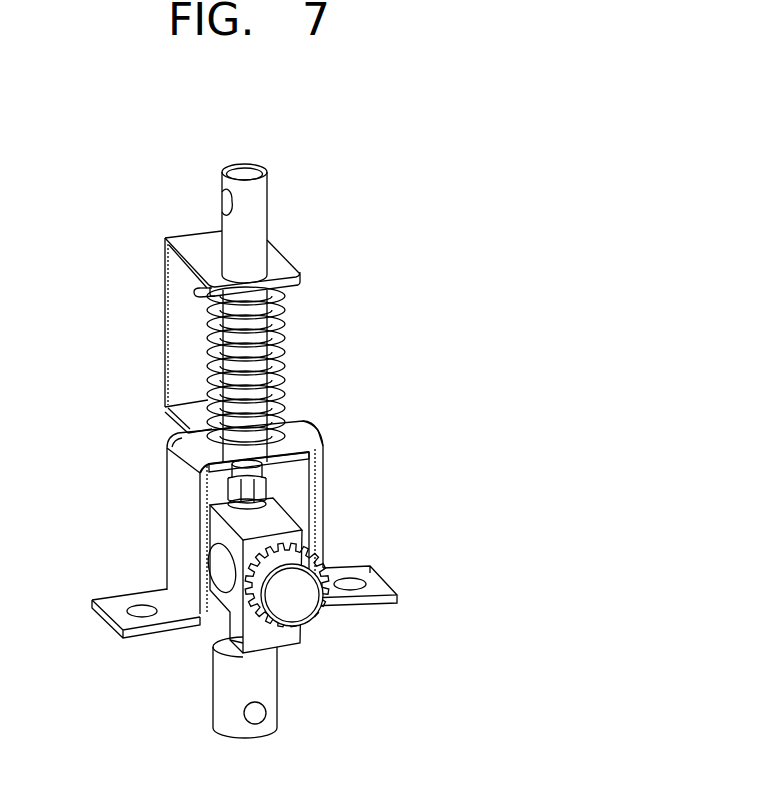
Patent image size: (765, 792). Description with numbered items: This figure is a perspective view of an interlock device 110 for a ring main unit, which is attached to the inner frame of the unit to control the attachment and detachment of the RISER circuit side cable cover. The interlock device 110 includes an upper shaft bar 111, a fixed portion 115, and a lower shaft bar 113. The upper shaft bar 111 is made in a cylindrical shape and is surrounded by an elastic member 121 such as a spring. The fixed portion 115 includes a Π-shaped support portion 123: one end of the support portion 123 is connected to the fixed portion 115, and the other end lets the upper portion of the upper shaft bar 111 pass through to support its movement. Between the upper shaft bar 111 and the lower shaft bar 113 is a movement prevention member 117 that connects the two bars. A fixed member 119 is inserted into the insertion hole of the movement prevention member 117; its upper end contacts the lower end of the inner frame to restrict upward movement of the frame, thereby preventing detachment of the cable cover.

The interlock device 110 is at (362, 111).
The upper shaft bar 111 is at (262, 208).
The lower shaft bar 113 is at (268, 698).
The fixed portion 115 is at (315, 473).
The movement prevention member 117 is at (293, 525).
The fixed member 119 is at (315, 620).
The elastic member 121 is at (285, 315).
The support portion 123 is at (163, 295).